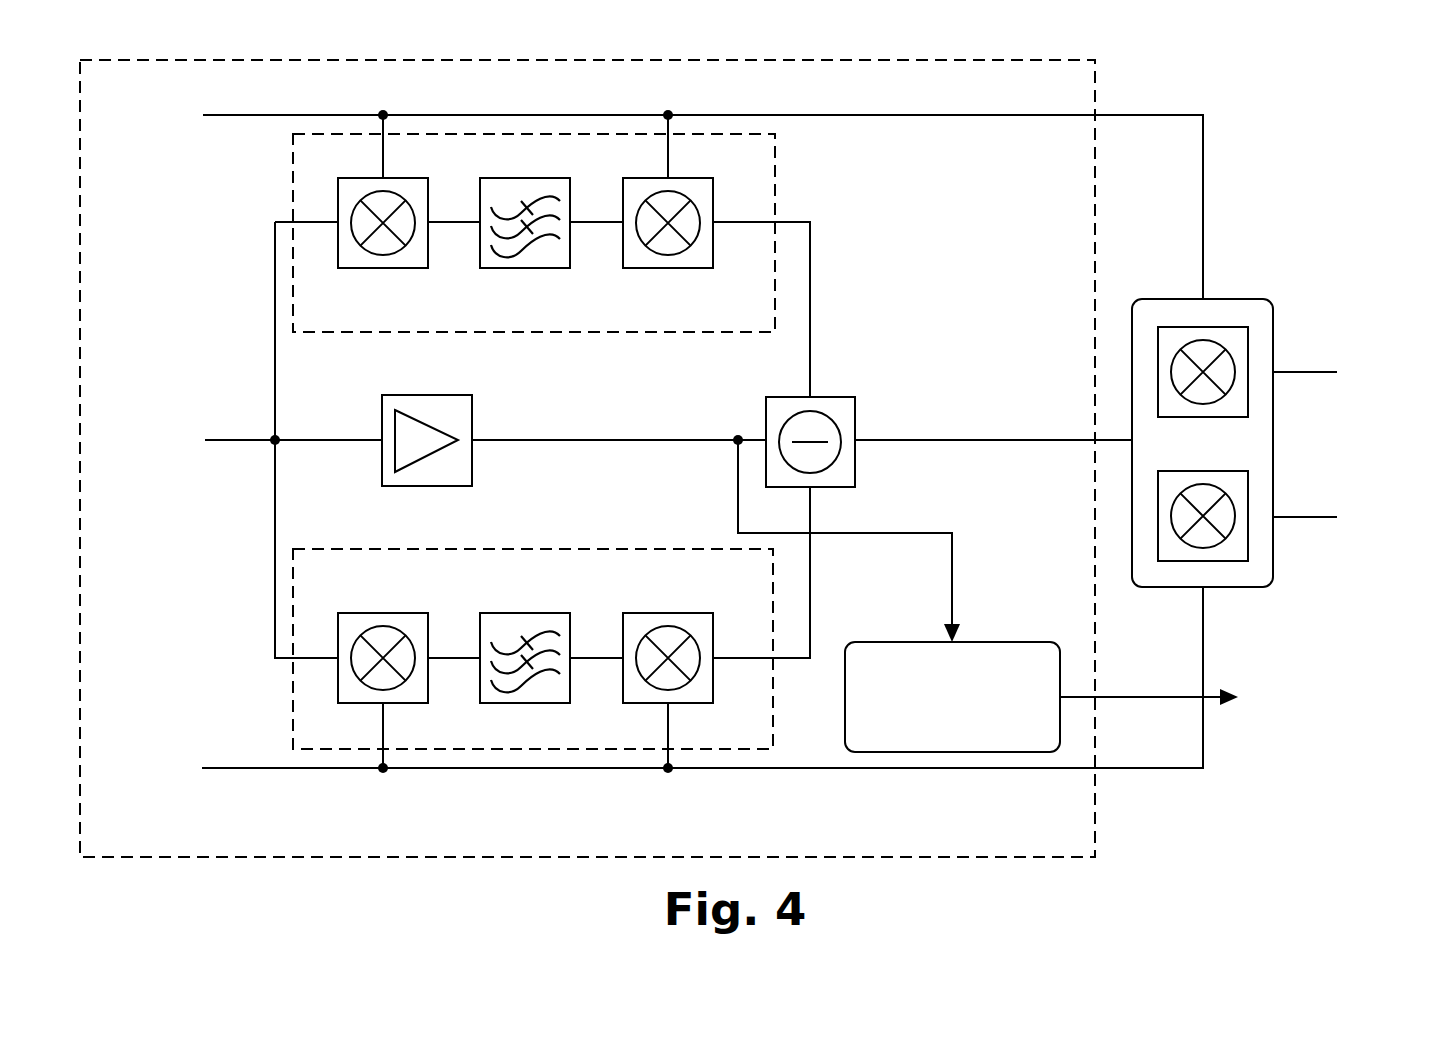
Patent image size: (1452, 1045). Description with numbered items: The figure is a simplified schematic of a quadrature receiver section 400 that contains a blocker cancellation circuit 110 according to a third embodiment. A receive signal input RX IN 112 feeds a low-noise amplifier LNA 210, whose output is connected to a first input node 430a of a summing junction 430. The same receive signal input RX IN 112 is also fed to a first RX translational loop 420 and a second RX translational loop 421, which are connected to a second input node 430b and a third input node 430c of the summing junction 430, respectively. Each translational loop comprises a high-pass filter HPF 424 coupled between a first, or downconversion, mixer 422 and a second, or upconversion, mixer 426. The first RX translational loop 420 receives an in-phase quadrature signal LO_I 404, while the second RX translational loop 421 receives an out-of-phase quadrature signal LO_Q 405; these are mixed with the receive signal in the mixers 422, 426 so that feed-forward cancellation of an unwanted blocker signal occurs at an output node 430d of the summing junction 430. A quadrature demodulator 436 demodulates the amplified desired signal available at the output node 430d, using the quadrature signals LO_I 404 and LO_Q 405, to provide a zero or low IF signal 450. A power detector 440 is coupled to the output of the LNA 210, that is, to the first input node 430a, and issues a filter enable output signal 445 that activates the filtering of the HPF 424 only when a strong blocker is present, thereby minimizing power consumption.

The quadrature receiver section 400 is at (1300, 92).
The blocker cancellation circuit 110 is at (348, 60).
The out-of-phase quadrature signal LO_Q 405 is at (240, 115).
The in-phase quadrature signal LO_I 404 is at (238, 768).
The receive signal input RX IN 112 is at (248, 440).
The low-noise amplifier LNA 210 is at (427, 395).
The second RX translational loop 421 is at (647, 332).
The first RX translational loop 420 is at (647, 549).
The first (downconversion) mixer 422 is at (382, 268).
The high-pass filter HPF 424 is at (525, 269).
The second (upconversion) mixer 426 is at (668, 269).
The summing junction 430 is at (857, 425).
The first input node 430a is at (757, 431).
The second input node 430b is at (819, 498).
The third input node 430c is at (819, 387).
The output node 430d is at (863, 454).
The quadrature demodulator 436 is at (1238, 299).
The zero or Low IF signal 450 is at (1350, 348).
The power detector 440 is at (988, 642).
The filter enable output signal 445 is at (1112, 697).